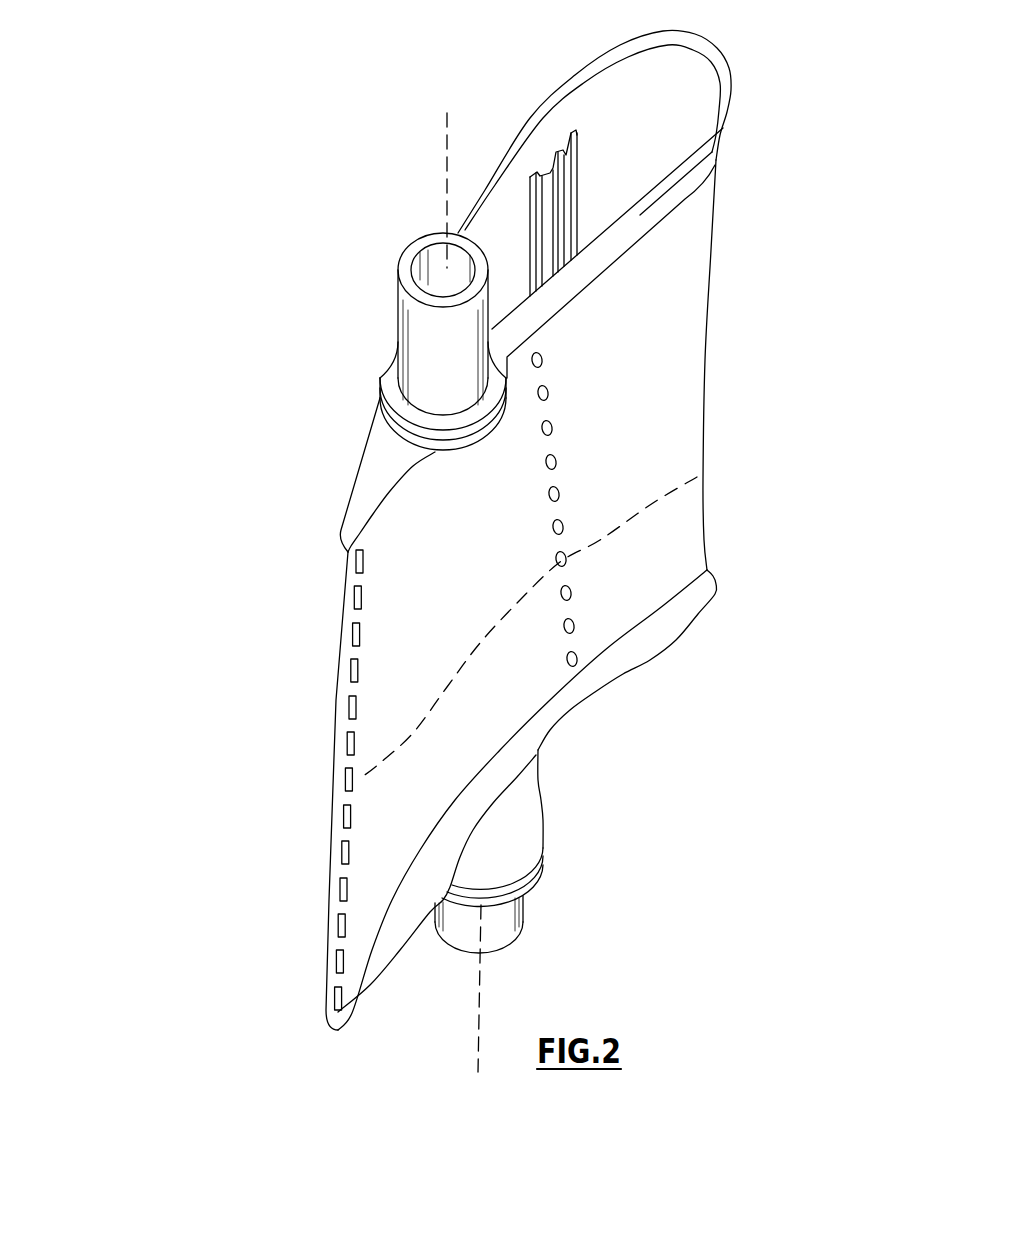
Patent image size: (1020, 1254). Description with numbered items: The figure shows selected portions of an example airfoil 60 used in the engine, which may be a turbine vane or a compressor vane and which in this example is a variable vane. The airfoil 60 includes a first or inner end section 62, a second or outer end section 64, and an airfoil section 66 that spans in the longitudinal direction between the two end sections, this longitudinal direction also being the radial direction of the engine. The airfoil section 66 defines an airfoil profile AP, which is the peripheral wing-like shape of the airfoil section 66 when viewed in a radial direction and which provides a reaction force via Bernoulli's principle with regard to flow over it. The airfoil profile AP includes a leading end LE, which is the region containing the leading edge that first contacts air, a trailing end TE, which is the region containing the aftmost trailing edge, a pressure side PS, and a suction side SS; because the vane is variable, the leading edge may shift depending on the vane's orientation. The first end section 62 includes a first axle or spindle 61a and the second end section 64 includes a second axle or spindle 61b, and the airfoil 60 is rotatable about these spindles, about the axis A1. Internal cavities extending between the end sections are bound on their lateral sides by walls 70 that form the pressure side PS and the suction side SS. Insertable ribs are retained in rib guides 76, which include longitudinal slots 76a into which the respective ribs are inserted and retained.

The airfoil 60 is at (163, 995).
The first axle or spindle 61a is at (503, 930).
The second axle or spindle 61b is at (410, 318).
The first or inner end section 62 is at (540, 757).
The second or outer end section 64 is at (720, 130).
The airfoil section 66 is at (380, 688).
The walls 70 is at (677, 265).
The rib guides 76 is at (589, 144).
The longitudinal slots 76a is at (563, 210).
The axis A1 is at (447, 145).
The suction side SS is at (454, 218).
The pressure side PS is at (658, 423).
The leading end LE is at (712, 328).
The trailing end TE is at (326, 865).
The airfoil profile AP is at (667, 500).